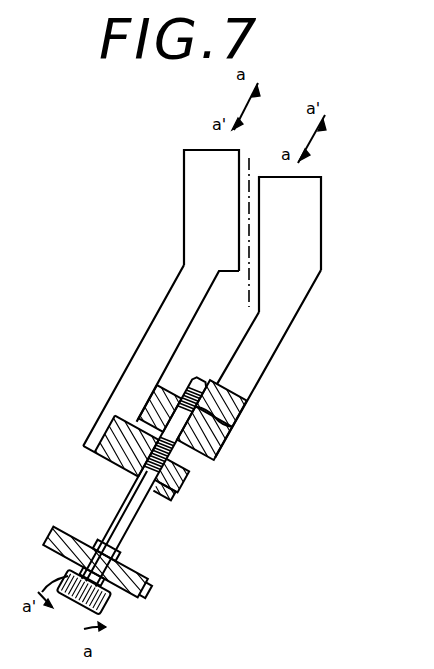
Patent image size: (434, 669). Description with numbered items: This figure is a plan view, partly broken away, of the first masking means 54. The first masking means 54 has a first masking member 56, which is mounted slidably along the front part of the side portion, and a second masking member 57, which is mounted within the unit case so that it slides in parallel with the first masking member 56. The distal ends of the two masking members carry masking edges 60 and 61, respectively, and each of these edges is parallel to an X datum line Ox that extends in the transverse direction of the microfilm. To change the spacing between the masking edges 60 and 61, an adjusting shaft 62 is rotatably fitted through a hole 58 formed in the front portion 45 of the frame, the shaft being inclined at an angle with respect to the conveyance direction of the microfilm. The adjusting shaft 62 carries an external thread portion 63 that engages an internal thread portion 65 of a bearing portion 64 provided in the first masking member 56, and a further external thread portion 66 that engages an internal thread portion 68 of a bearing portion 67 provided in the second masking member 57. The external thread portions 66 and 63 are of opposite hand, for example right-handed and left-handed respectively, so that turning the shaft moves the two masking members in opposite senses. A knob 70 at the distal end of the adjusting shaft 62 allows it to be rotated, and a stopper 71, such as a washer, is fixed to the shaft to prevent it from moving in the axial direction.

The first masking means 54 is at (232, 303).
The first masking member 56 is at (143, 320).
The second masking member 57 is at (303, 306).
The masking edge 60 is at (239, 192).
The masking edge 61 is at (262, 210).
The X datum line Ox is at (252, 243).
The adjusting shaft 62 is at (128, 493).
The external thread portion 63 is at (183, 488).
The bearing portion 64 is at (103, 421).
The internal thread portion 65 is at (170, 498).
The external thread portion 66 is at (172, 400).
The bearing portion 67 is at (232, 425).
The internal thread portion 68 is at (219, 445).
The hole 58 is at (93, 556).
The front portion 45 is at (145, 588).
The knob 70 is at (106, 600).
The stopper 71 is at (145, 553).